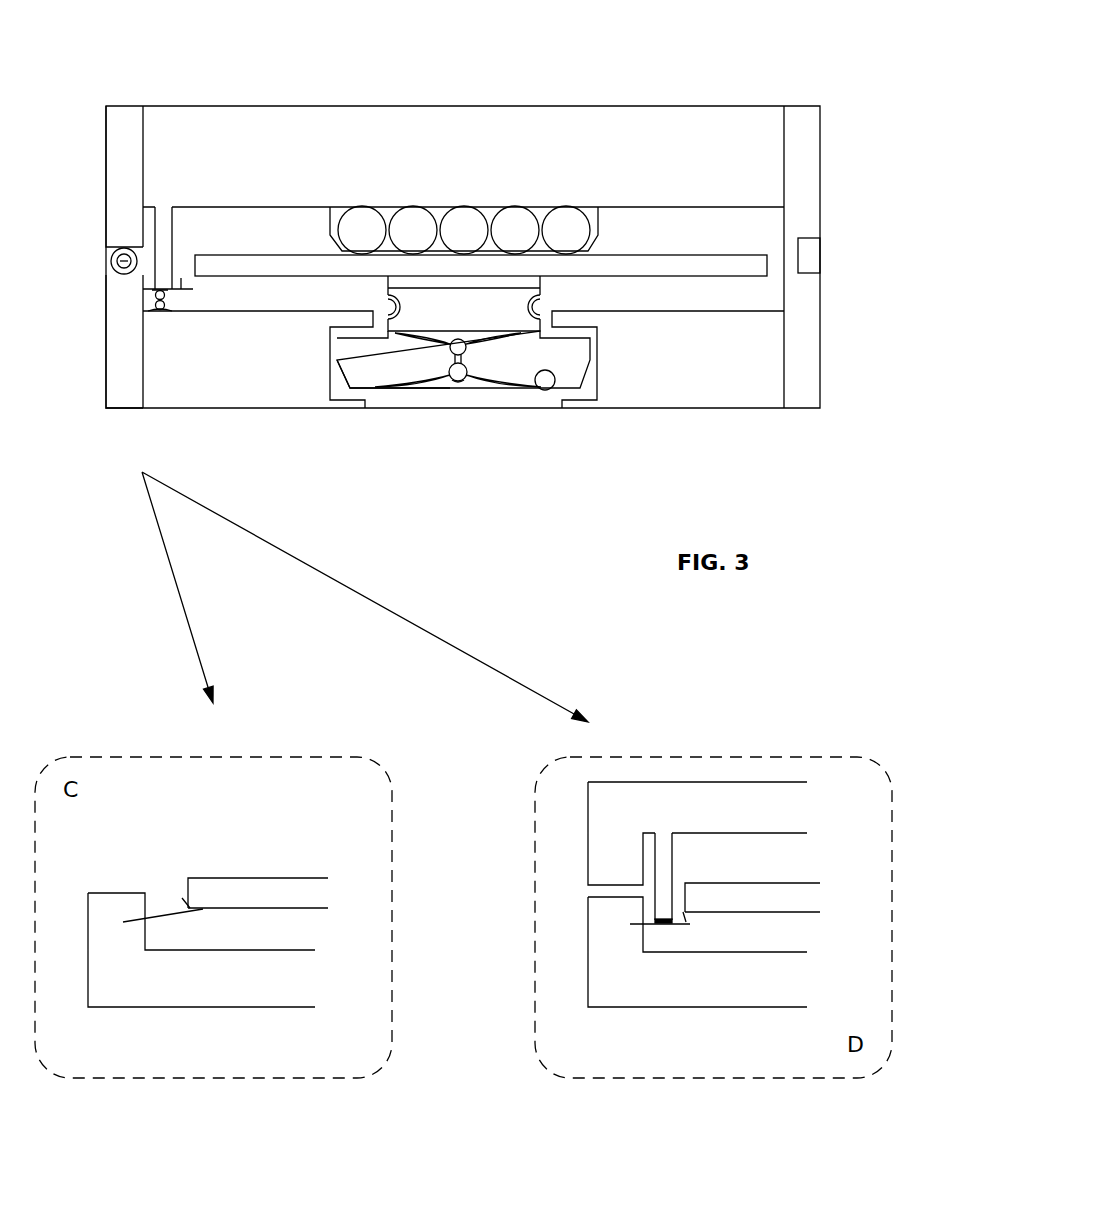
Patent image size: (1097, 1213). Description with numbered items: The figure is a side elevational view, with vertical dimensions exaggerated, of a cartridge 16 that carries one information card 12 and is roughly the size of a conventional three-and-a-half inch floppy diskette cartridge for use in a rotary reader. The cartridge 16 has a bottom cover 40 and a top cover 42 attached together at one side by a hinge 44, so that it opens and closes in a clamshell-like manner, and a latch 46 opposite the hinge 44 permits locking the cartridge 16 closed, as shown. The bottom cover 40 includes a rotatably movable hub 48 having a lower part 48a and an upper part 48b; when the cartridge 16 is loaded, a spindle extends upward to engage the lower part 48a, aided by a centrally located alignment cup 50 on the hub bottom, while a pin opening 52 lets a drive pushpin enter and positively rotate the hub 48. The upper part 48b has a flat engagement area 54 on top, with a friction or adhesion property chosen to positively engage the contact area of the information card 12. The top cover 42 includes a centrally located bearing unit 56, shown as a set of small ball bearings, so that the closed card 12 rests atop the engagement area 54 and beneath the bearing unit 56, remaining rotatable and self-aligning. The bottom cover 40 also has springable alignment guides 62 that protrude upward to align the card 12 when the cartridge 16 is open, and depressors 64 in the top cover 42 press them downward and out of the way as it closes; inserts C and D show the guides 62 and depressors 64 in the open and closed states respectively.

The cartridge 16 is at (770, 39).
The information card 12 is at (658, 268).
The bottom cover 40 is at (760, 377).
The top cover 42 is at (760, 162).
The hinge 44 is at (112, 262).
The latch 46 is at (821, 258).
The hub 48 is at (580, 357).
The lower part 48a is at (375, 375).
The upper part 48b is at (517, 303).
The alignment cup 50 is at (458, 385).
The pin opening 52 is at (547, 388).
The engagement area 54 is at (387, 287).
The bearing unit 56 is at (463, 207).
The alignment guides 62 is at (164, 330).
The depressors 64 is at (160, 222).